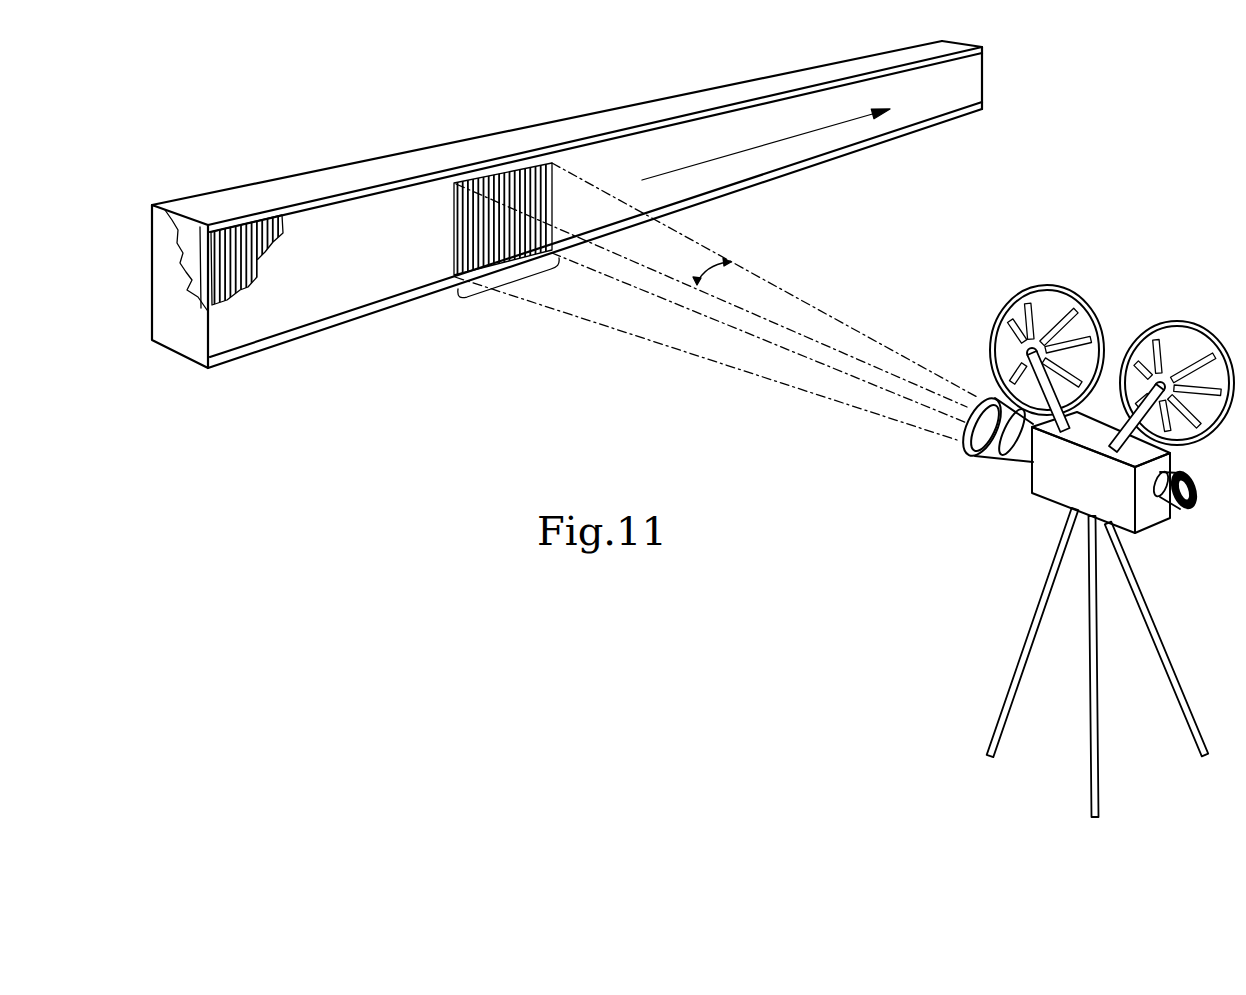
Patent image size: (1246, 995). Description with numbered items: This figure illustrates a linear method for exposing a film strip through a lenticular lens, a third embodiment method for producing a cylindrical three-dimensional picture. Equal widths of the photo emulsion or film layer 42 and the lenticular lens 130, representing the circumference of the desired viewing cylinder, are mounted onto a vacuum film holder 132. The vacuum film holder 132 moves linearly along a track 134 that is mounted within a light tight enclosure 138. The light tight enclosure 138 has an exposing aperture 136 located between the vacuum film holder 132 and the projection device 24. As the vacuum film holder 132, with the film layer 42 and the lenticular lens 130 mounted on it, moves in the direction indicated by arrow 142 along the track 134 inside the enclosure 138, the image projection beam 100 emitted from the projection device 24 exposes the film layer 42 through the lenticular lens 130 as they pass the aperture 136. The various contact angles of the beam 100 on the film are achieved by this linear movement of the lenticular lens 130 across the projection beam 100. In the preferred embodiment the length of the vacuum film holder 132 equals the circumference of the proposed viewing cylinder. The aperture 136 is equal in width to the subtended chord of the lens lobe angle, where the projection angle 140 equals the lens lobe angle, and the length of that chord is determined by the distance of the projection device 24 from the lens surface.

The projection device 24 is at (1045, 471).
The photo emulsion or film layer 42 is at (265, 245).
The image projection beam 100 is at (895, 352).
The lenticular lens 130 is at (232, 245).
The vacuum film holder 132 is at (203, 277).
The track 134 is at (328, 327).
The exposing aperture 136 is at (507, 284).
The light tight enclosure 138 is at (400, 166).
The projection angle 140 is at (697, 283).
The arrow 142 is at (763, 142).